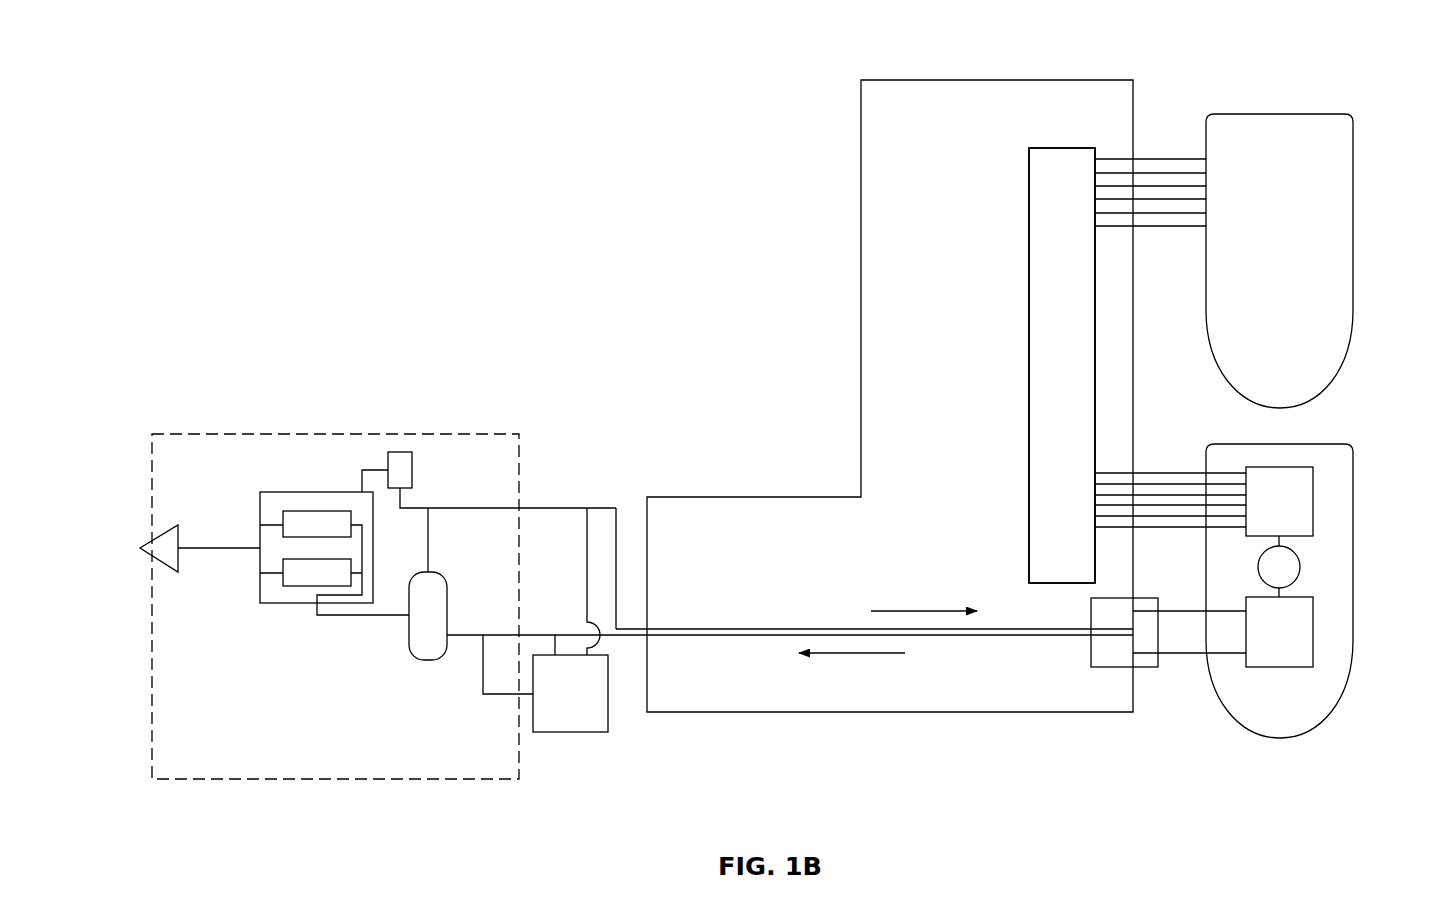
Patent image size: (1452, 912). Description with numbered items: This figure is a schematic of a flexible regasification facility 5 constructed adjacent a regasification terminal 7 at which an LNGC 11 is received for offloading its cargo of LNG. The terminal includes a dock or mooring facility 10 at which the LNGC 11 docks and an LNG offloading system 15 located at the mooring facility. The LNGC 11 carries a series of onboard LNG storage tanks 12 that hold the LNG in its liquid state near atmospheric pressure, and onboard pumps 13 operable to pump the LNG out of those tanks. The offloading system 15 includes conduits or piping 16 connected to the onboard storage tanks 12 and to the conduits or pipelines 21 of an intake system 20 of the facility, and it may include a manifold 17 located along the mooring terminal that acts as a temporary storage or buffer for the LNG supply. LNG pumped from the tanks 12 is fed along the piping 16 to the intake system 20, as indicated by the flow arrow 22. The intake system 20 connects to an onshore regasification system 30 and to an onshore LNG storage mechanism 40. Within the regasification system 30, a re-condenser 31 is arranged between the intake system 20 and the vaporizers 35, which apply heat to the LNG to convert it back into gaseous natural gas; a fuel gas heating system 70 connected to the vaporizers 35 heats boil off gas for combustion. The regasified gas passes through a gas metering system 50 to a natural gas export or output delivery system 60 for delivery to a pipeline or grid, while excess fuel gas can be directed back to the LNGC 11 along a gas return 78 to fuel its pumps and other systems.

The flexible regasification facility 5 is at (352, 540).
The regasification terminal 7 is at (1062, 142).
The dock or mooring facility 10 is at (857, 185).
The LNGC 11 is at (1356, 228).
The onboard LNG storage tanks 12 is at (1290, 502).
The onboard pumps 13 is at (1290, 568).
The LNG offloading system 15 is at (1025, 368).
The conduits or piping 16 is at (1157, 158).
The manifold 17 is at (1045, 495).
The intake system 20 is at (622, 660).
The conduits or pipelines 21 is at (977, 637).
The flow of incoming LNG 22 is at (853, 654).
The regasification system 30 is at (466, 424).
The re-condenser 31 is at (429, 661).
The vaporizers 35 is at (290, 593).
The onshore LNG storage mechanisms 40 is at (577, 740).
The gas metering system 50 is at (178, 536).
The natural gas export or output delivery system 60 is at (162, 529).
The fuel gas heating system 70 is at (400, 450).
The gas return 78 is at (835, 628).